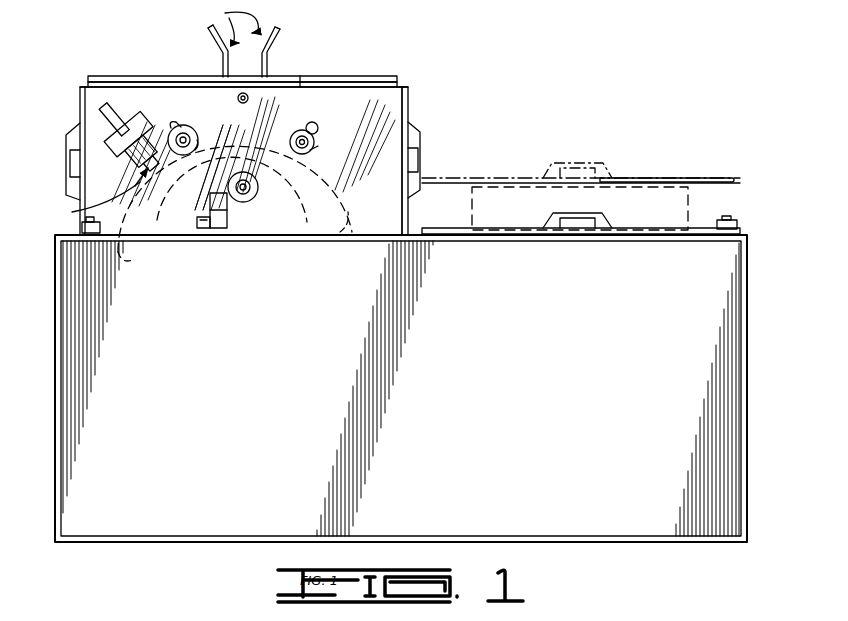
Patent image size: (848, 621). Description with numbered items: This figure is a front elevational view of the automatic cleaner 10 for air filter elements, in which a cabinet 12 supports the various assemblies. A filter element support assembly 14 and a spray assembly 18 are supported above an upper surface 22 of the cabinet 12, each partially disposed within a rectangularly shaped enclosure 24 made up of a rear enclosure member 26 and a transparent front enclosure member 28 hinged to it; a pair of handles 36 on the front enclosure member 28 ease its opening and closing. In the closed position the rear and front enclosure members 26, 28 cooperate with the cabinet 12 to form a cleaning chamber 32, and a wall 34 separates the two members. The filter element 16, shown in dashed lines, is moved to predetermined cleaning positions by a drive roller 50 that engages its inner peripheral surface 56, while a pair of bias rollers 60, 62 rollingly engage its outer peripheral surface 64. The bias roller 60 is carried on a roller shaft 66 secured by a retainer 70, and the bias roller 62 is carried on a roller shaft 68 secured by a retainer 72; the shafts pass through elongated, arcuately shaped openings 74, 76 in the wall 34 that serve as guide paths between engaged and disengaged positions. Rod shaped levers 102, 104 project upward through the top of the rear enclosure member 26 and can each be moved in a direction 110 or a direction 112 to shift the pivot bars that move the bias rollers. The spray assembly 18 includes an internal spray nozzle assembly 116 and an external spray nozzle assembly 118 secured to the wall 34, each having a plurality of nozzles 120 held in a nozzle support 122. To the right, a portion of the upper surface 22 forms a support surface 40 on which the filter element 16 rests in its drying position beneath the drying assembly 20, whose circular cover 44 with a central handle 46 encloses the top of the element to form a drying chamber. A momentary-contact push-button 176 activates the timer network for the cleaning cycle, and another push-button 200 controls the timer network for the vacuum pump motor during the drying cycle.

The automatic cleaner for air filter elements 10 is at (424, 146).
The cabinet 12 is at (712, 335).
The filter element support assembly 14 is at (199, 118).
The filter element 16 is at (350, 212).
The spray assembly 18 is at (133, 105).
The drying assembly 20 is at (641, 175).
The upper surface 22 is at (362, 235).
The enclosure 24 is at (395, 77).
The rear enclosure member 26 is at (352, 77).
The front enclosure member 28 is at (410, 104).
The cleaning chamber 32 is at (390, 218).
The wall 34 is at (305, 80).
The handles 36 is at (68, 135).
The support surface 40 is at (655, 228).
The cover 44 is at (680, 172).
The handle 46 is at (592, 160).
The drive roller 50 is at (253, 198).
The inner peripheral surface 56 is at (235, 199).
The bias roller 60 is at (198, 139).
The bias roller 62 is at (296, 134).
The outer peripheral surface 64 is at (132, 260).
The roller shaft 66 is at (156, 181).
The roller shaft 68 is at (292, 152).
The retainer 70 is at (186, 147).
The retainer 72 is at (315, 136).
The arcuately shaped opening 74 is at (181, 126).
The arcuately shaped opening 76 is at (311, 122).
The lever 102 is at (207, 36).
The lever 104 is at (282, 37).
The direction 110 is at (228, 22).
The direction 112 is at (200, 29).
The internal spray nozzle assembly 116 is at (216, 238).
The external spray nozzle assembly 118 is at (89, 202).
The nozzles 120 is at (208, 222).
The nozzle support 122 is at (222, 224).
The push-button 176 is at (80, 231).
The push-button 200 is at (740, 224).